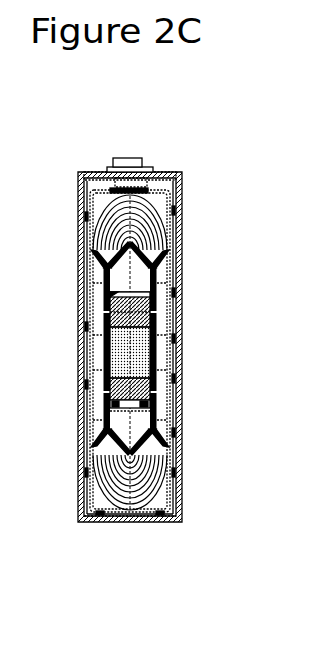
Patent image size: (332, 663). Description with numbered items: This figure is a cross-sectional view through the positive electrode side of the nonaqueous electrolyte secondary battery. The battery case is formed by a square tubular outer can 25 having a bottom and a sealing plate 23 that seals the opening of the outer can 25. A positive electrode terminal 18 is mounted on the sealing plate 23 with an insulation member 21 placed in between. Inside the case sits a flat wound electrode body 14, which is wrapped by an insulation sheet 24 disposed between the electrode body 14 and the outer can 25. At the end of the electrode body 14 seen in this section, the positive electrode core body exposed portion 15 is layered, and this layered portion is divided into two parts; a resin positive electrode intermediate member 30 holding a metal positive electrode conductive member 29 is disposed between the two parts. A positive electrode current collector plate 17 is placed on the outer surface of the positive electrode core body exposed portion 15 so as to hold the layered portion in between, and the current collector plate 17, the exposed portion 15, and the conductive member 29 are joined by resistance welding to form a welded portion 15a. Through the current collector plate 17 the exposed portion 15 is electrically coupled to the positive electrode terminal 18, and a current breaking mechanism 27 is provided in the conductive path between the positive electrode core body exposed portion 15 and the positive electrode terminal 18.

The electrode body 14 is at (138, 427).
The positive electrode core body exposed portion 15 is at (118, 430).
The welded portion 15a is at (150, 353).
The positive electrode current collector plate 17 is at (158, 265).
The positive electrode terminal 18 is at (119, 158).
The insulation member 21 is at (108, 168).
The sealing plate 23 is at (166, 172).
The insulation sheet 24 is at (90, 514).
The outer can 25 is at (150, 523).
The current breaking mechanism 27 is at (116, 184).
The positive electrode conductive member 29 is at (105, 300).
The positive electrode intermediate member 30 is at (150, 406).